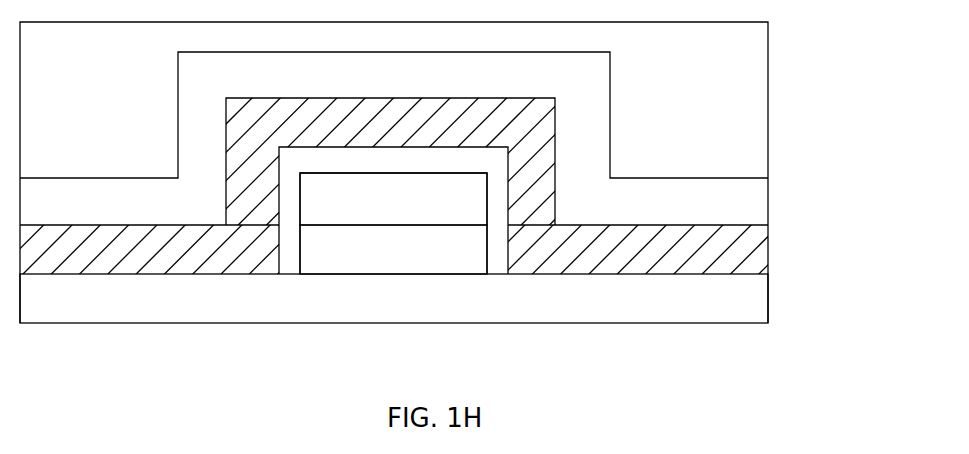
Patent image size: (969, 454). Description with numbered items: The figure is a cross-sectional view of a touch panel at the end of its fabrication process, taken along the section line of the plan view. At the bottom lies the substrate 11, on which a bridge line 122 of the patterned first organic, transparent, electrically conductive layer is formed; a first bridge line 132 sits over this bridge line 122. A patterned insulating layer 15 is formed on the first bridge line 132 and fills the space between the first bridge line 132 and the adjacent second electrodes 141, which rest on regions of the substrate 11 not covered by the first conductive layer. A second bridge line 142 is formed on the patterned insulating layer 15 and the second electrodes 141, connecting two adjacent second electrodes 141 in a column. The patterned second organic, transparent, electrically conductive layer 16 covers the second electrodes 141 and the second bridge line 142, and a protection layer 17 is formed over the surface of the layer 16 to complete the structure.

The substrate 11 is at (717, 308).
The bridge line 122 is at (341, 234).
The first bridge line 132 is at (443, 205).
The patterned insulating layer 15 is at (497, 263).
The second electrode 141 is at (712, 253).
The second bridge line 142 is at (242, 187).
The patterned second organic, transparent, electrically conductive layer 16 is at (712, 204).
The protection layer 17 is at (712, 111).